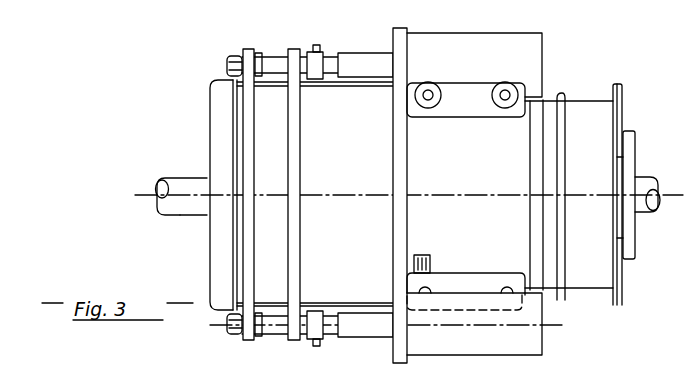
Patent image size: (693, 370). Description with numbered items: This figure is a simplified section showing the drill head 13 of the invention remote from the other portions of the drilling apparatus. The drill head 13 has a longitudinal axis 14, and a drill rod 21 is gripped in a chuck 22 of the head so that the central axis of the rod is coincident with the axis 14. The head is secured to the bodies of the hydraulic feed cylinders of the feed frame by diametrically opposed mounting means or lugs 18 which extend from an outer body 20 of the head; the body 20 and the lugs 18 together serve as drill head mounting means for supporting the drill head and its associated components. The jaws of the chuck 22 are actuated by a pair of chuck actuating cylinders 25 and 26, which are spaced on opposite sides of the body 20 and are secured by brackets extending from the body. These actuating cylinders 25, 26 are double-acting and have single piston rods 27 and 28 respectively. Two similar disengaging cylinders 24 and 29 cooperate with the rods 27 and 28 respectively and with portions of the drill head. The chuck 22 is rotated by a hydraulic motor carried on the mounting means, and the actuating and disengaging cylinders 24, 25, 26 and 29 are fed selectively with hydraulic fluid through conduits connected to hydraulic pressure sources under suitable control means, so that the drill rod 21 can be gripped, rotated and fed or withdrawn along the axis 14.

The drill head 13 is at (203, 88).
The longitudinal axis 14 is at (149, 200).
The mounting means or lugs 18 is at (493, 68).
The outer body 20 is at (470, 167).
The drill rod 21 is at (188, 208).
The chuck 22 is at (208, 160).
The disengaging cylinder 24 is at (302, 340).
The chuck actuating cylinder 25 is at (520, 333).
The chuck actuating cylinder 26 is at (509, 23).
The piston rod 27 is at (330, 334).
The piston rod 28 is at (374, 34).
The disengaging cylinder 29 is at (312, 52).